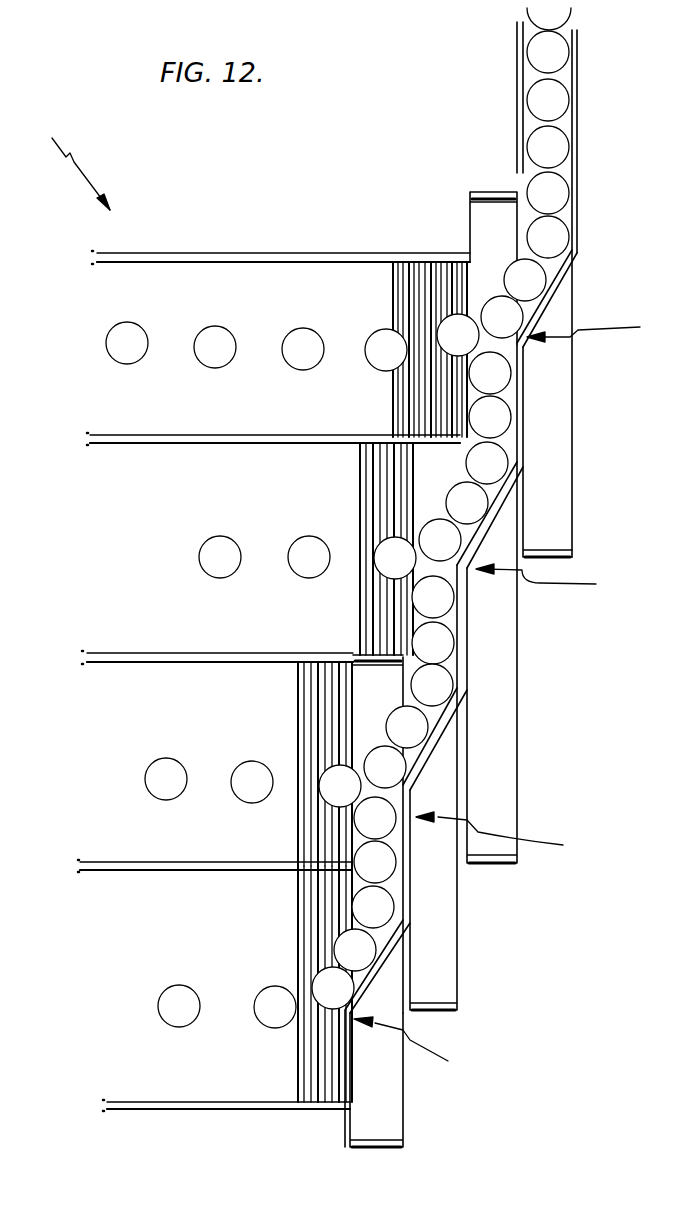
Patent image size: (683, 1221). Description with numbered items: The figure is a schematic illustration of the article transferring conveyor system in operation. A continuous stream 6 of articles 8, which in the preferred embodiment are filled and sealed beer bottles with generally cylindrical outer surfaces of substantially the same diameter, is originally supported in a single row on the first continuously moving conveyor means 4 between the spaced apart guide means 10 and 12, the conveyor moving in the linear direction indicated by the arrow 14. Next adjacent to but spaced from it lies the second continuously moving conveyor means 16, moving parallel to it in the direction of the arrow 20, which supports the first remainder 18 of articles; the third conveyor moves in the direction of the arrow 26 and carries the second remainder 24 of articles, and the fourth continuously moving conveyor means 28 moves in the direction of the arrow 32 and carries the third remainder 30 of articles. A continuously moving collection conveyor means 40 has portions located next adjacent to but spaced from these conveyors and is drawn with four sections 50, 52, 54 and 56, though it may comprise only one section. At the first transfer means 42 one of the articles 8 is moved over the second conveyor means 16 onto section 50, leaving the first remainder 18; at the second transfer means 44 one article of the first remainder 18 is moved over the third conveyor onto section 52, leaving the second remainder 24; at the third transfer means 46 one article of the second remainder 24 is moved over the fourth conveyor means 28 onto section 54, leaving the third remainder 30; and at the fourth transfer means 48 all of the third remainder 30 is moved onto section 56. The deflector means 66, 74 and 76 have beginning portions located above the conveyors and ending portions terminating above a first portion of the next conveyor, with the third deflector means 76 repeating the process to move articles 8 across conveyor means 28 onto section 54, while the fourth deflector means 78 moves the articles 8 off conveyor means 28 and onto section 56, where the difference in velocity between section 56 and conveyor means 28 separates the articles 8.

The first continuously moving conveyor means 4 is at (562, 128).
The continuous stream of articles 6 is at (571, 73).
The articles 8 is at (134, 363).
The guide means 10 is at (578, 92).
The guide means 12 is at (520, 85).
The arrow 14 is at (547, 494).
The second continuously moving conveyor means 16 is at (506, 247).
The first remainder of articles 18 is at (506, 457).
The arrow 20 is at (489, 792).
The second remainder of articles 24 is at (450, 678).
The arrow 26 is at (428, 925).
The fourth continuously moving conveyor means 28 is at (388, 705).
The third remainder of articles 30 is at (393, 903).
The arrow 32 is at (375, 1080).
The continuously moving collection conveyor means 40 is at (71, 162).
The first transfer means 42 is at (598, 328).
The second transfer means 44 is at (552, 581).
The third transfer means 46 is at (505, 836).
The fourth transfer means 48 is at (417, 1047).
The section of collection conveyor means 50 is at (395, 294).
The section of collection conveyor means 52 is at (360, 481).
The section of collection conveyor means 54 is at (298, 692).
The section of collection conveyor means 56 is at (298, 911).
The deflector means 66 is at (563, 289).
The deflector means 74 is at (502, 505).
The deflector means 76 is at (418, 771).
The fourth deflector means 78 is at (365, 988).